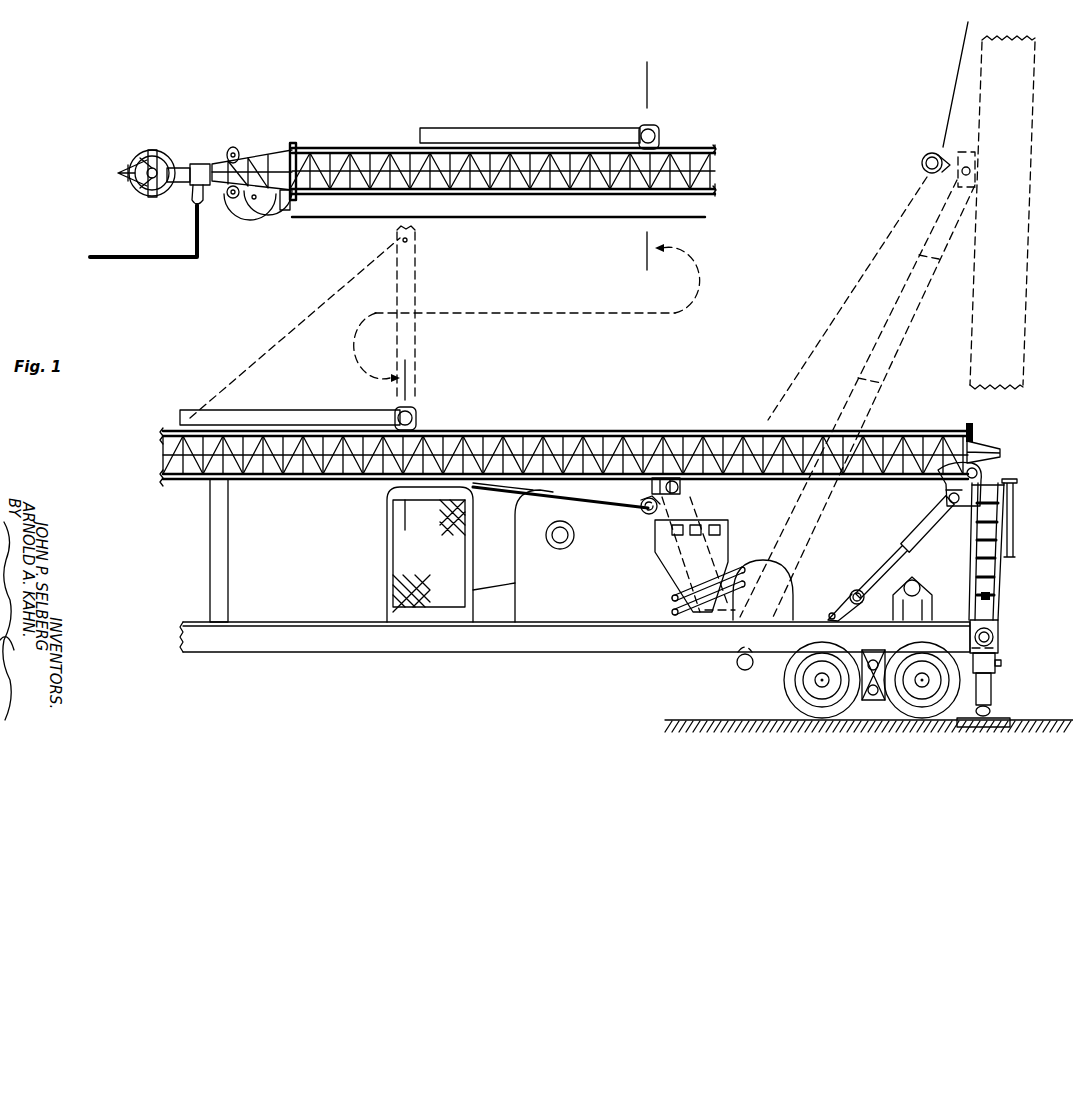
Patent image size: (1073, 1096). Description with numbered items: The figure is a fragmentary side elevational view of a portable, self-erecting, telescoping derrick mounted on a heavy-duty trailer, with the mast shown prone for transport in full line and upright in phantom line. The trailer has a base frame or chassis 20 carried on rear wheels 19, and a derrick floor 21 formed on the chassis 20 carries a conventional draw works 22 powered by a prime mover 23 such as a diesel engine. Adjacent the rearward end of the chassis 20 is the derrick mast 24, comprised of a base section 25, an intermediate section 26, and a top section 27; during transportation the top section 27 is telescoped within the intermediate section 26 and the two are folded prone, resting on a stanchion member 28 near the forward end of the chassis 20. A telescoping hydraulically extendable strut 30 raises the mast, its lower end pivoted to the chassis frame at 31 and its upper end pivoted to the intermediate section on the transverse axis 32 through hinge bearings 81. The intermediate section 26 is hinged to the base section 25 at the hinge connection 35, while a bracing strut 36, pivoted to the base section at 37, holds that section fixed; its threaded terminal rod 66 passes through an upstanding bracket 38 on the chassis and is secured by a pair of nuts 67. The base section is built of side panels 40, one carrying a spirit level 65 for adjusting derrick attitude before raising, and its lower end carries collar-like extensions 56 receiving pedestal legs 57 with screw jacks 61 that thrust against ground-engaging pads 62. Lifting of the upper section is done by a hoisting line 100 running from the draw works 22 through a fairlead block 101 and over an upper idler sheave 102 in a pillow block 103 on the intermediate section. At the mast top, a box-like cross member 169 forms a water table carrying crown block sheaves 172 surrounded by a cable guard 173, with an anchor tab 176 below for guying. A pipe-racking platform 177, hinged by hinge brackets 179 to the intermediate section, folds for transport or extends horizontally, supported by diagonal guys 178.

The rear wheels 19 is at (903, 702).
The chassis 20 is at (622, 603).
The derrick floor 21 is at (340, 621).
The draw works 22 is at (530, 588).
The prime mover 23 is at (400, 540).
The derrick mast 24 is at (1014, 433).
The base section 25 is at (1011, 603).
The intermediate section 26 is at (372, 152).
The top section 27 is at (284, 151).
The stanchion member 28 is at (232, 523).
The hydraulically extendable strut 30 is at (852, 383).
The pivotal attachment of strut lower end 31 is at (732, 654).
The transverse axis of strut upper attachment 32 is at (980, 162).
The hinge connection 35 is at (979, 472).
The bracing strut 36 is at (925, 513).
The pivotal connection of bracing strut 37 is at (953, 505).
The upstanding bracket 38 is at (846, 598).
The side panels 40 is at (1005, 581).
The collar-like extensions 56 is at (996, 661).
The pedestal leg 57 is at (993, 681).
The screw jacks 61 is at (988, 707).
The ground-engaging pads 62 is at (1004, 719).
The level 65 is at (993, 597).
The threaded terminal rod 66 is at (860, 598).
The nuts 67 is at (838, 600).
The hinge bearings 81 is at (973, 183).
The hoisting line 100 is at (528, 218).
The fairlead block 101 is at (925, 158).
The upper idler sheave 102 is at (250, 207).
The pillow block 103 is at (272, 207).
The box-like cross member 169 is at (200, 168).
The crown block sheaves 172 is at (157, 152).
The cable guard 173 is at (127, 180).
The anchor tab 176 is at (252, 142).
The pipe-racking platform 177 is at (526, 133).
The diagonal supporting guys 178 is at (275, 333).
The hinge brackets 179 is at (660, 142).